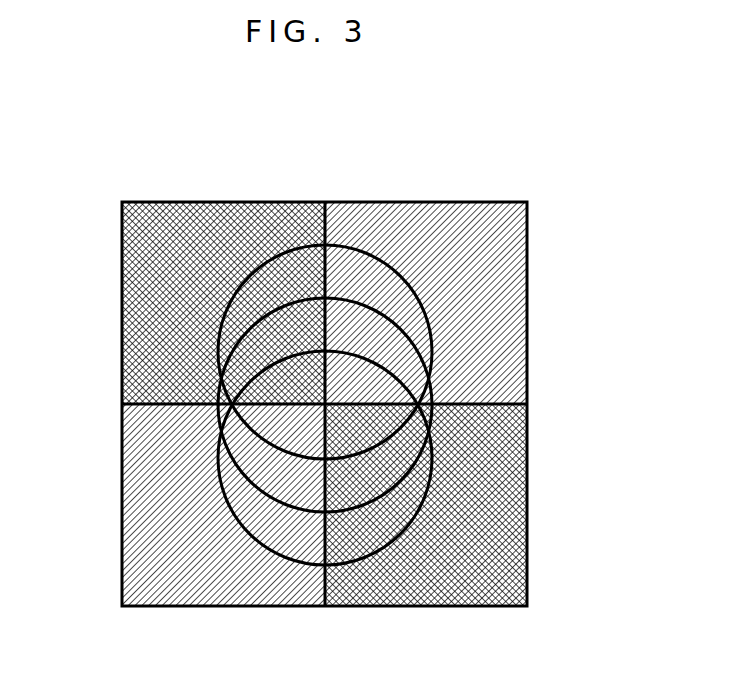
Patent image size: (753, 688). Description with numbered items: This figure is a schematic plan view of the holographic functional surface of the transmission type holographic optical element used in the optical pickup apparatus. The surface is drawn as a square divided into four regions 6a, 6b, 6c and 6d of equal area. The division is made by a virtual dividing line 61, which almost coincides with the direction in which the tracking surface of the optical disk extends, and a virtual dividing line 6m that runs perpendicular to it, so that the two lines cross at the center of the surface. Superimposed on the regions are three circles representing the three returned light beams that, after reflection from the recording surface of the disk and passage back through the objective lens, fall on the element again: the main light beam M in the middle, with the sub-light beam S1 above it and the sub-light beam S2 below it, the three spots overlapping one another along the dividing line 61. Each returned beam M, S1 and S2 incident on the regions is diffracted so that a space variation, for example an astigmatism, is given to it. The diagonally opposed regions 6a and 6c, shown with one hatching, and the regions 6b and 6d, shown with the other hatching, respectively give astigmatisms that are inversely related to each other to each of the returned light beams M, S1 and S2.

The virtual dividing line 61 is at (325, 202).
The sub-light beam S1 is at (387, 263).
The region 6c is at (143, 287).
The region 6b is at (505, 303).
The virtual dividing line 6m is at (150, 405).
The main light beam M is at (219, 482).
The sub-light beam S2 is at (227, 508).
The region 6d is at (229, 583).
The region 6a is at (433, 580).